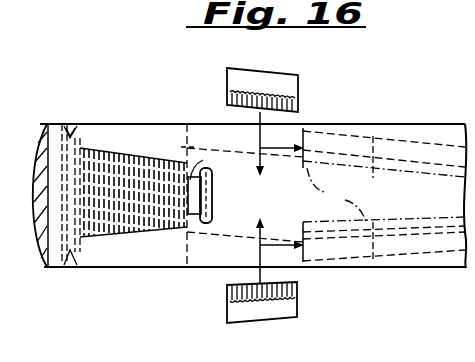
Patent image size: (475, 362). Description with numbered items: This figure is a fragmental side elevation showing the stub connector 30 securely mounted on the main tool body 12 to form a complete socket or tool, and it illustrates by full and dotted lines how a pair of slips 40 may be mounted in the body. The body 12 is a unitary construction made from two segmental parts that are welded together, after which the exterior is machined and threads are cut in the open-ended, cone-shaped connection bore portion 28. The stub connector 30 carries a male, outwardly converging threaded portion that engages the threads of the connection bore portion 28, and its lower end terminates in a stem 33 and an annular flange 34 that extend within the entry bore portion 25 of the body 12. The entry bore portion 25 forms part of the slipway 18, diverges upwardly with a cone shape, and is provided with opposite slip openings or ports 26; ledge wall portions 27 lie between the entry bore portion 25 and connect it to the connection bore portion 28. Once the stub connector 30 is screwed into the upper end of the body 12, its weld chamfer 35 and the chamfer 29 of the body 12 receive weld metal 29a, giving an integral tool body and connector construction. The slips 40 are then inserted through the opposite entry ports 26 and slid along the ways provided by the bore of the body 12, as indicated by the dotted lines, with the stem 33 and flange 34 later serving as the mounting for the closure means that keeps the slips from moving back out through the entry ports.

The tool body 12 is at (384, 126).
The slipway 18 is at (430, 152).
The entry bore portion 25 is at (238, 162).
The slip openings or ports 26 is at (207, 126).
The ledge wall portions 27 is at (203, 234).
The connection bore portion 28 is at (125, 234).
The chamfer 29 is at (78, 252).
The weld metal 29a is at (72, 128).
The stub connector 30 is at (50, 247).
The stem 33 is at (207, 164).
The annular flange 34 is at (213, 185).
The weld chamfer 35 is at (70, 128).
The slips 40 is at (298, 86).